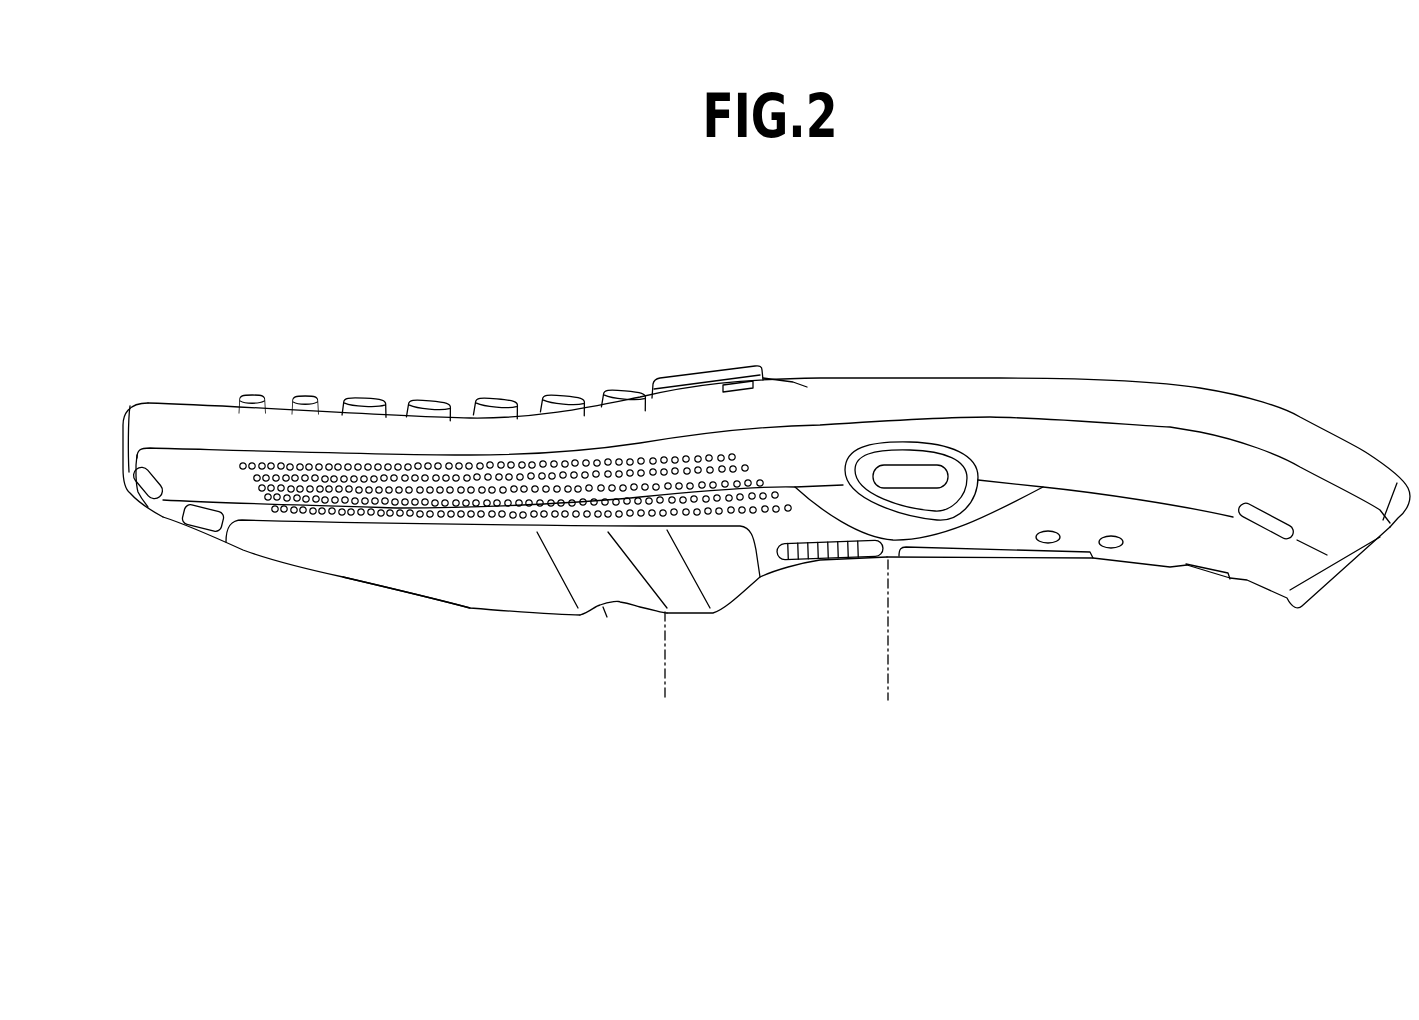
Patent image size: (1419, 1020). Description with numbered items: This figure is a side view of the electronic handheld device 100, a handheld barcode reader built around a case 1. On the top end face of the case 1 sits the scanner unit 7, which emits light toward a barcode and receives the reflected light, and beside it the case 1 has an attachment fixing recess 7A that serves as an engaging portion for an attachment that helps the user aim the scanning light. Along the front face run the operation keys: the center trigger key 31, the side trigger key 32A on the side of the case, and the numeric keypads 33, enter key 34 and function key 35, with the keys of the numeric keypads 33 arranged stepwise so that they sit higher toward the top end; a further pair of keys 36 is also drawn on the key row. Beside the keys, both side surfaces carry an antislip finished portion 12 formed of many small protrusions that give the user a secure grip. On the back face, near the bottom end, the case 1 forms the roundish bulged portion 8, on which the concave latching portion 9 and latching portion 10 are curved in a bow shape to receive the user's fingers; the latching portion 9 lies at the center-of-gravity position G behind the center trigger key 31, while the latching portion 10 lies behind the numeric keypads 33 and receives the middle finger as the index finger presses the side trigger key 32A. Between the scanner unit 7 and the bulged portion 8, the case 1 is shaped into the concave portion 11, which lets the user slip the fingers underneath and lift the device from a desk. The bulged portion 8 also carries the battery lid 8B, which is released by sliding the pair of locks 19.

The electronic handheld device 100 is at (1243, 333).
The case 1 is at (1058, 377).
The scanner unit 7 is at (1363, 572).
The attachment fixing recess 7A is at (1277, 537).
The bulged portion 8 is at (410, 580).
The battery lid 8B is at (482, 643).
The latching portion 9 is at (740, 590).
The latching portion 10 is at (599, 614).
The concave portion 11 is at (1005, 578).
The antislip finished portion 12 is at (267, 500).
The locks 19 is at (827, 558).
The center trigger key 31 is at (705, 372).
The side trigger key 32A is at (915, 475).
The numeric keypads 33 is at (412, 372).
The enter key 34 is at (528, 358).
The function key 35 is at (367, 397).
The operation buttons 36 is at (237, 370).
The center-of-gravity position G is at (665, 697).